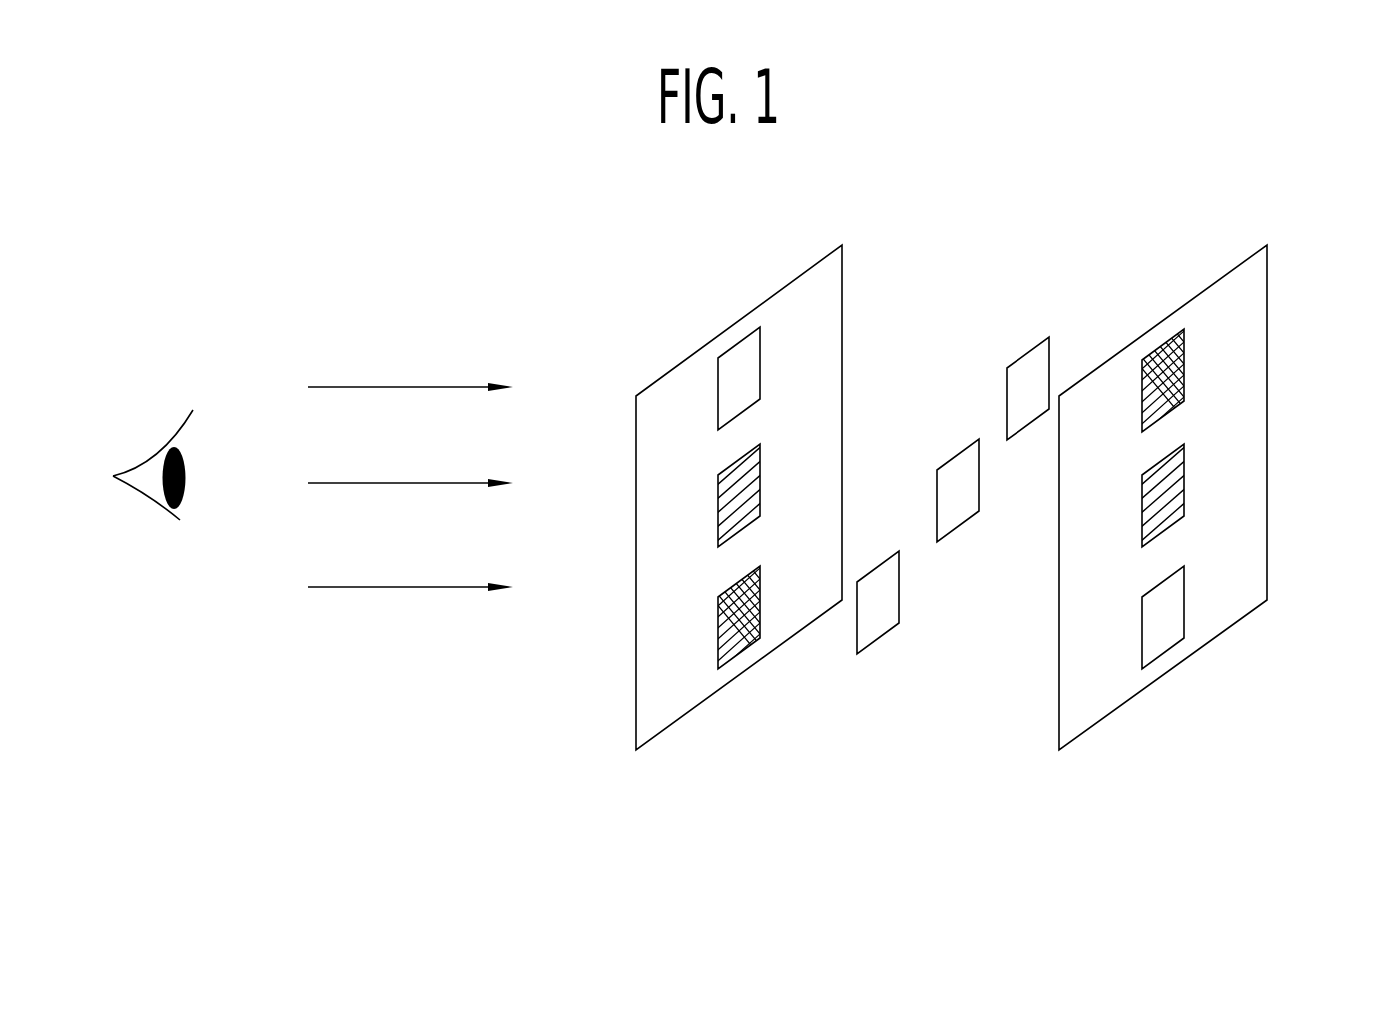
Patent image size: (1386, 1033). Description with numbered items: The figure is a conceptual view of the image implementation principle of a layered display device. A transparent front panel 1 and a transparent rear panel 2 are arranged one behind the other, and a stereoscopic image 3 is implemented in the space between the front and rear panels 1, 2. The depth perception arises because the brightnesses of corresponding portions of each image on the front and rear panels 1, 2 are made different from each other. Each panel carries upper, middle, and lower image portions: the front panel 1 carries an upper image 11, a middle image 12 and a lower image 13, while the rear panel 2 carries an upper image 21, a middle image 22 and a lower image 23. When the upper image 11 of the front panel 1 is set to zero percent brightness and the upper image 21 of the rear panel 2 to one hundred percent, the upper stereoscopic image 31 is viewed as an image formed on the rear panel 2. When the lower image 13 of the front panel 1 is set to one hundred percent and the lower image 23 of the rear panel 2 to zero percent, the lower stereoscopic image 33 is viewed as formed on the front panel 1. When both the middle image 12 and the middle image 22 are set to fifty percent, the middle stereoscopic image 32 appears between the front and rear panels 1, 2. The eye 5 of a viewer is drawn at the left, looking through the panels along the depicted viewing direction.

The transparent front panel 1 is at (636, 720).
The upper image 11 is at (727, 394).
The middle image 12 is at (727, 497).
The lower image 13 is at (720, 628).
The transparent rear panel 2 is at (1059, 720).
The upper image 21 is at (1185, 362).
The middle image 22 is at (1170, 488).
The lower image 23 is at (1170, 602).
The stereoscopic image 3 is at (1053, 237).
The upper stereoscopic image 31 is at (1027, 363).
The middle stereoscopic image 32 is at (955, 515).
The lower stereoscopic image 33 is at (873, 630).
The viewer's eye 5 is at (150, 515).